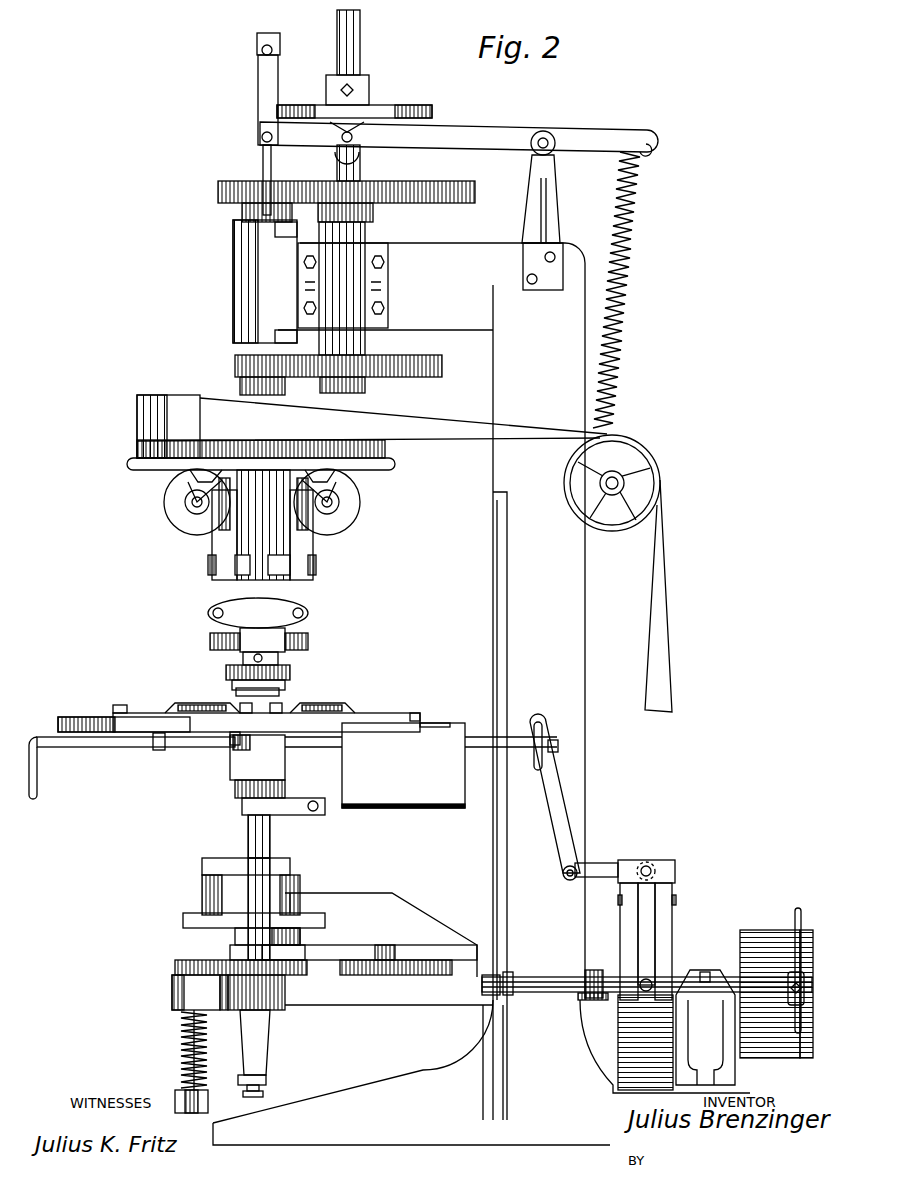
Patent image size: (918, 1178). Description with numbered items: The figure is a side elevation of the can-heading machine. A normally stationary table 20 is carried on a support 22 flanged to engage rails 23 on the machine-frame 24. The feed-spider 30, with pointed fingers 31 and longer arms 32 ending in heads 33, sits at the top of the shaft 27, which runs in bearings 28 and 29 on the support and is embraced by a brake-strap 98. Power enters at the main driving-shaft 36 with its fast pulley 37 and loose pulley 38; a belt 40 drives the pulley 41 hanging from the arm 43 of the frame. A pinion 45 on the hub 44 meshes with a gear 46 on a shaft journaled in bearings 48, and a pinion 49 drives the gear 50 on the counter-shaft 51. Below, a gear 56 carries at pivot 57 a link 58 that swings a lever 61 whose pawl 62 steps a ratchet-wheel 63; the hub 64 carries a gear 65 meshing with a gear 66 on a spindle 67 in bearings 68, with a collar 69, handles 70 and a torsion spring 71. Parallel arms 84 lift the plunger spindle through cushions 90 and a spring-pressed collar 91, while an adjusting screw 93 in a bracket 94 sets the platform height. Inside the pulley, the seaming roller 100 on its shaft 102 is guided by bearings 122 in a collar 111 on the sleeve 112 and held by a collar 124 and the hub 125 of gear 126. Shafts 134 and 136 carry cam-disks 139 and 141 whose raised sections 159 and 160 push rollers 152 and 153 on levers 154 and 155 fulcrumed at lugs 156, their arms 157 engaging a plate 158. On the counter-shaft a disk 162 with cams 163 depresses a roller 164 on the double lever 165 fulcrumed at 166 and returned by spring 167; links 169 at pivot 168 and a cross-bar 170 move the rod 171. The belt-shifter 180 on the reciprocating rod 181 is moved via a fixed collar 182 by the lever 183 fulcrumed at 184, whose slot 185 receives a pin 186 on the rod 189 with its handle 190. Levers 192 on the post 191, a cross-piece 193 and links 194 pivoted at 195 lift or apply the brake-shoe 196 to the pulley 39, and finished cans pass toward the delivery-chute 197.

The table 20 is at (75, 717).
The bracket or support 22 is at (481, 694).
The rails 23 is at (500, 636).
The machine-frame 24 is at (491, 1062).
The shaft 27 is at (248, 830).
The bearing 28 is at (277, 775).
The bearing 29 is at (270, 988).
The feed-spider 30 is at (290, 719).
The pointed fingers 31 is at (237, 735).
The arms 32 is at (152, 714).
The heads 33 is at (130, 700).
The main driving-shaft 36 is at (606, 1000).
The fast pulley 37 is at (800, 1060).
The loose pulley 38 is at (770, 1062).
The pulley 39 is at (630, 1078).
The belt 40 is at (688, 641).
The pulley 41 is at (165, 395).
The arm or bracket 43 is at (265, 281).
The hub 44 is at (258, 385).
The pinion 45 is at (240, 362).
The gear 46 is at (430, 375).
The bearings 48 is at (370, 278).
The pinion 49 is at (366, 195).
The gear 50 is at (440, 202).
The counter-shaft 51 is at (355, 168).
The gear 56 is at (408, 965).
The pivot 57 is at (385, 950).
The link 58 is at (335, 955).
The lever 61 is at (255, 938).
The spring-pressed pawl 62 is at (277, 918).
The ratchet-wheel 63 is at (185, 918).
The hub 64 is at (258, 952).
The gear 65 is at (210, 992).
The gear 66 is at (178, 962).
The spindle 67 is at (180, 1032).
The bearings 68 is at (180, 988).
The collar 69 is at (172, 1095).
The handles 70 is at (206, 1105).
The spring 71 is at (178, 1053).
The arms 84 is at (272, 833).
The yielding cushions 90 is at (212, 890).
The spring-pressed collar 91 is at (222, 865).
The adjusting screw 93 is at (258, 1093).
The bracket 94 is at (254, 1047).
The brake-strap 98 is at (288, 804).
The roller 100 is at (238, 691).
The shaft 102 is at (248, 582).
The collar 111 is at (300, 648).
The tubular hub or sleeve 112 is at (215, 637).
The bearings 122 is at (270, 640).
The collar 124 is at (285, 588).
The hub 125 is at (282, 670).
The gear 126 is at (290, 676).
The shaft 134 is at (185, 502).
The shaft 136 is at (340, 502).
The cam-disk 139 is at (178, 515).
The cam-disk 141 is at (338, 518).
The roller 152 is at (190, 490).
The roller 153 is at (312, 490).
The lever 154 is at (222, 545).
The lever 155 is at (300, 545).
The fulcrum lugs 156 is at (208, 565).
The arm 157 is at (213, 613).
The plate 158 is at (258, 613).
The raised section 159 is at (205, 468).
The raised section 160 is at (318, 475).
The disk 162 is at (378, 115).
The cams 163 is at (375, 125).
The roller 164 is at (350, 122).
The levers 165 is at (477, 150).
The fulcrum 166 is at (545, 132).
The spring 167 is at (633, 223).
The pivot 168 is at (262, 138).
The links 169 is at (262, 95).
The cross-bar 170 is at (258, 43).
The rod 171 is at (263, 162).
The belt-shifter 180 is at (793, 913).
The reciprocating rod 181 is at (555, 986).
The fixed collar 182 is at (576, 1000).
The lever 183 is at (577, 905).
The fulcrum 184 is at (563, 878).
The slot 185 is at (547, 738).
The pin 186 is at (538, 760).
The rod 189 is at (125, 748).
The handle 190 is at (33, 784).
The post 191 is at (600, 864).
The levers 192 is at (670, 877).
The cross-piece 193 is at (656, 866).
The links 194 is at (647, 920).
The pivot 195 is at (655, 980).
The brake-shoe 196 is at (673, 901).
The delivery-chute 197 is at (403, 765).